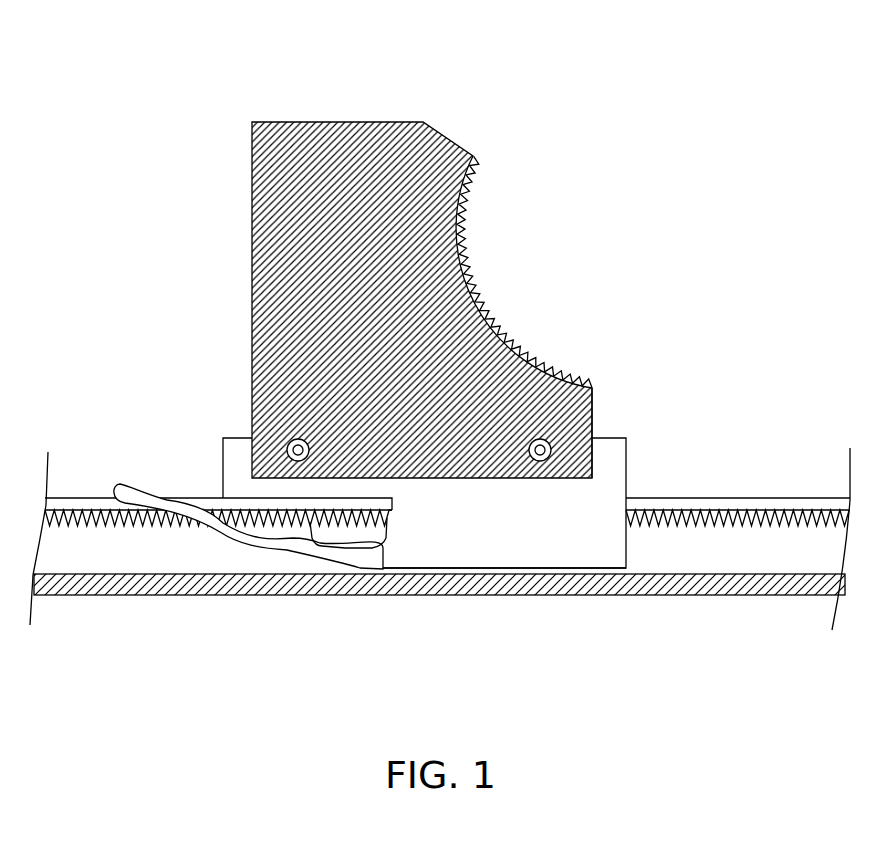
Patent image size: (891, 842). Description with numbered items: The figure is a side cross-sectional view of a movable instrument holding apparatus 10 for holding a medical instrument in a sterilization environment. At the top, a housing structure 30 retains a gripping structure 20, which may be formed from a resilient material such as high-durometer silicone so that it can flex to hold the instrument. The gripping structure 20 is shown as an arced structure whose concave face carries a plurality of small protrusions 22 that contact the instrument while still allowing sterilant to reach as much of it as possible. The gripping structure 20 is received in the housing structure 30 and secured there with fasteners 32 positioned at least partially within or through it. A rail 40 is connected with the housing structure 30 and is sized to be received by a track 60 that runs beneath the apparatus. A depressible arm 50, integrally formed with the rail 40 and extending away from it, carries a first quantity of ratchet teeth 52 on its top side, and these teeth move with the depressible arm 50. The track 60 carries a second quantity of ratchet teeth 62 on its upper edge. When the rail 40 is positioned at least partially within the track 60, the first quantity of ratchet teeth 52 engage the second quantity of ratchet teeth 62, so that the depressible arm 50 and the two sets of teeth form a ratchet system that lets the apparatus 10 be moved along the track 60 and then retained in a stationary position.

The movable instrument holding apparatus 10 is at (645, 144).
The gripping structure 20 is at (362, 160).
The small protrusions 22 is at (488, 303).
The housing structure 30 is at (627, 482).
The fasteners 32 is at (592, 385).
The rail 40 is at (455, 545).
The depressible arm 50 is at (150, 500).
The first quantity of ratchet teeth 52 is at (328, 533).
The track 60 is at (717, 583).
The second quantity of ratchet teeth 62 is at (800, 527).